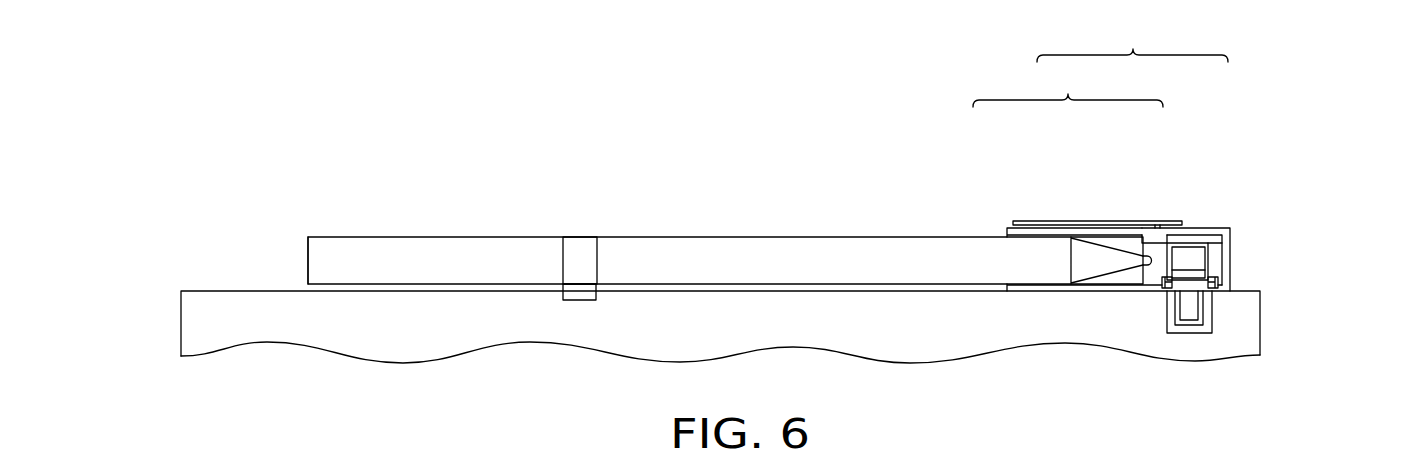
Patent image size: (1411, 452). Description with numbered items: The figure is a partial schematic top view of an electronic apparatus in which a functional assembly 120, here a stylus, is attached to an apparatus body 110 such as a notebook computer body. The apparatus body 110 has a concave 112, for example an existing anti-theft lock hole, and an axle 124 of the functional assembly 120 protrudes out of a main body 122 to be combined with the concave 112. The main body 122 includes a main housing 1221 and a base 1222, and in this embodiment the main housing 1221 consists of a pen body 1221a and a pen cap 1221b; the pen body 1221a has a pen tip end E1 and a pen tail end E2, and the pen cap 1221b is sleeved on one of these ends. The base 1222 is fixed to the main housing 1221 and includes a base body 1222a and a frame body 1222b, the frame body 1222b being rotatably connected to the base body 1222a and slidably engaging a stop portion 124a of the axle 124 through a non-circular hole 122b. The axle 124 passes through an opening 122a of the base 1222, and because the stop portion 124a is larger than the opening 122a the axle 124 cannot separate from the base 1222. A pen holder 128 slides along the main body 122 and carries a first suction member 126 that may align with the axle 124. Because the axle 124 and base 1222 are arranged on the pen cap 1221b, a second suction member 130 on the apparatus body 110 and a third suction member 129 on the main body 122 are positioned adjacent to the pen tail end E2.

The apparatus body 110 is at (1010, 328).
The concave 112 is at (1206, 319).
The functional assembly 120 is at (773, 208).
The main body 122 is at (1132, 37).
The main housing 1221 is at (1068, 81).
The pen body 1221a is at (972, 236).
The pen cap 1221b is at (1112, 240).
The base 1222 is at (1226, 262).
The base body 1222a is at (1220, 280).
The frame body 1222b is at (1167, 268).
The opening 122a is at (1190, 288).
The non-circular hole 122b is at (1218, 243).
The axle 124 is at (1188, 307).
The stop portion 124a is at (1190, 277).
The first suction member 126 is at (1138, 238).
The pen holder 128 is at (1037, 221).
The third suction member 129 is at (578, 248).
The second suction member 130 is at (578, 297).
The pen tip end E1 is at (1112, 243).
The pen tail end E2 is at (300, 260).